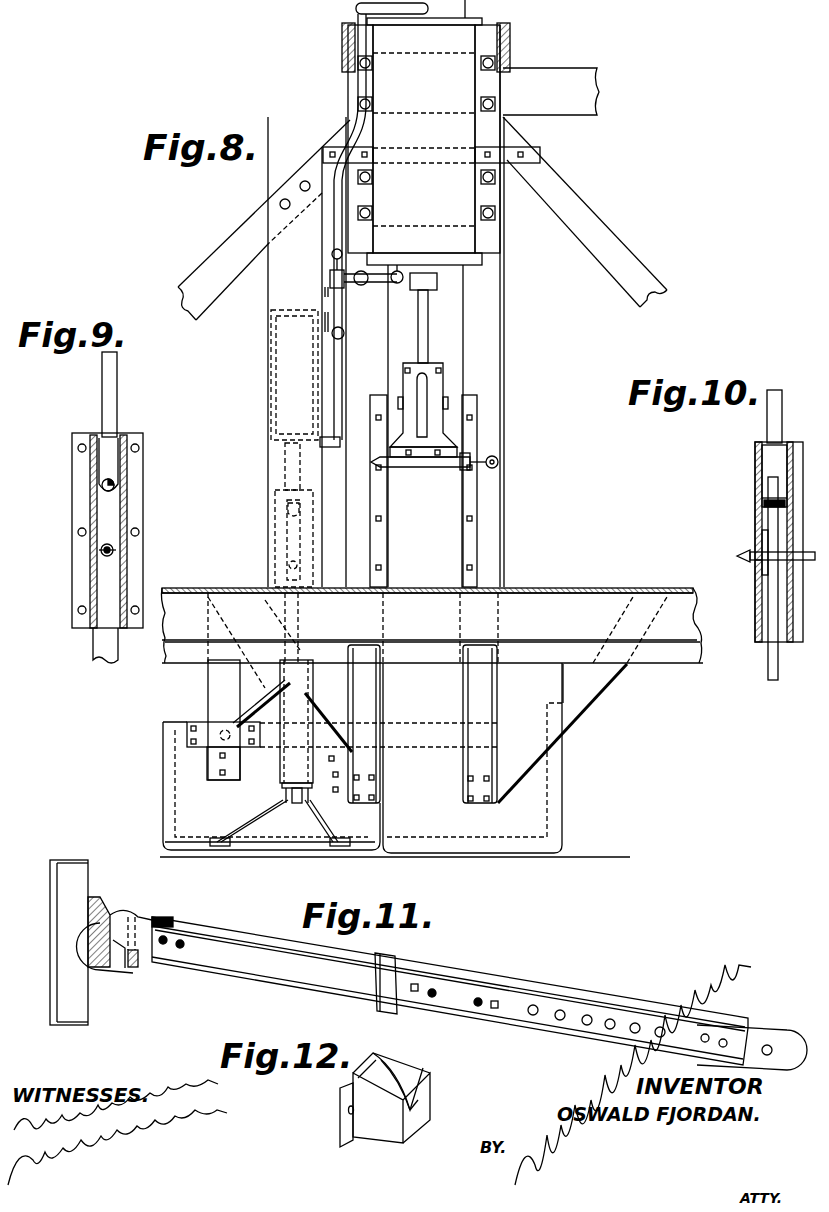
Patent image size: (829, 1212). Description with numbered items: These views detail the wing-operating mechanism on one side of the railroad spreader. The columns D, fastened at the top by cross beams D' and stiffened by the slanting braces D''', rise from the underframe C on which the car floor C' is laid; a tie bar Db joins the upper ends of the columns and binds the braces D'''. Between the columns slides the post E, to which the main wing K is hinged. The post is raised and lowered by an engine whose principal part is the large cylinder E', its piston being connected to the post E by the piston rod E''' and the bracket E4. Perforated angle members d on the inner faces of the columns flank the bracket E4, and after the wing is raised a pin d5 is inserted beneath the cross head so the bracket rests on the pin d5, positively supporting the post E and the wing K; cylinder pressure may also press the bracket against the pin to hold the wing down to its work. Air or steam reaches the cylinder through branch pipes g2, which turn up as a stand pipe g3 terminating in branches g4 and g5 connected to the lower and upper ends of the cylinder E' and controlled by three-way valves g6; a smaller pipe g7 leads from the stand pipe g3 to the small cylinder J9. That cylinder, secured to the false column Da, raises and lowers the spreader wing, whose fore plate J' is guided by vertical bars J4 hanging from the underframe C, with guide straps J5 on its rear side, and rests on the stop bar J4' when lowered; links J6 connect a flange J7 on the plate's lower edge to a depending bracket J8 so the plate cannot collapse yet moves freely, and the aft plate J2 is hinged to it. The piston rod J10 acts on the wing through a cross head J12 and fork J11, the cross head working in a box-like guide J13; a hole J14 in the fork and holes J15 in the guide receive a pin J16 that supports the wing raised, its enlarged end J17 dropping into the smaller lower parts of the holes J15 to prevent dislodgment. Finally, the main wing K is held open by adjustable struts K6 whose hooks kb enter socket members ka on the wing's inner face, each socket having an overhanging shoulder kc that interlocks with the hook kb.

In FIG. 8, the column D is at (398, 293).
In FIG. 8, the cross bar D' is at (447, 69).
In FIG. 8, the tie bar Db is at (507, 157).
In FIG. 8, the slanting brace D''' is at (422, 218).
In FIG. 8, the false column Da is at (282, 470).
In FIG. 8, the cylinder E' is at (424, 141).
In FIG. 8, the post E is at (434, 326).
In FIG. 8, the piston rod E''' is at (414, 301).
In FIG. 8, the bracket E4 is at (440, 393).
In FIG. 8, the guide bars d is at (378, 517).
In FIG. 8, the pin d5 is at (433, 462).
In FIG. 8, the branch pipe g2 is at (437, 640).
In FIG. 8, the stand pipe g3 is at (338, 316).
In FIG. 8, the branch g4 is at (384, 270).
In FIG. 8, the branch g5 is at (412, 9).
In FIG. 8, the three way valve g6 is at (332, 254).
In FIG. 8, the pipe g7 is at (339, 386).
In FIG. 8, the underframe C is at (432, 625).
In FIG. 8, the car floor C' is at (427, 577).
In FIG. 8, the fore plate J' is at (271, 786).
In FIG. 8, the aft plate J2 is at (505, 758).
In FIG. 8, the vertical bar J4 is at (334, 724).
In FIG. 8, the stop bar J4' is at (224, 779).
In FIG. 8, the guide block J5 is at (212, 728).
In FIG. 8, the link J6 is at (308, 806).
In FIG. 8, the flange J7 is at (216, 851).
In FIG. 8, the depending bracket J8 is at (290, 761).
In FIG. 8, the engine cylinder J9 is at (276, 383).
In FIG. 9, the piston rod J10 is at (110, 408).
In FIG. 10, the piston rod J10 is at (773, 418).
In FIG. 8, the fork J11 is at (264, 690).
In FIG. 9, the fork J11 is at (116, 512).
In FIG. 10, the fork J11 is at (772, 654).
In FIG. 9, the cross head J12 is at (113, 470).
In FIG. 10, the cross head J12 is at (770, 467).
In FIG. 10, the guide J13 is at (780, 498).
In FIG. 9, the hole J14 is at (114, 550).
In FIG. 10, the hole J15 is at (758, 543).
In FIG. 9, the pin J16 is at (100, 549).
In FIG. 10, the pin J16 is at (757, 561).
In FIG. 10, the enlarged end J17 is at (737, 556).
In FIG. 11, the main wing K is at (62, 893).
In FIG. 11, the strut K6 is at (247, 940).
In FIG. 11, the socket member ka is at (95, 902).
In FIG. 12, the socket member ka is at (354, 1082).
In FIG. 11, the hook kb is at (110, 970).
In FIG. 11, the overhanging shoulder kc is at (116, 908).
In FIG. 12, the overhanging shoulder kc is at (388, 1072).